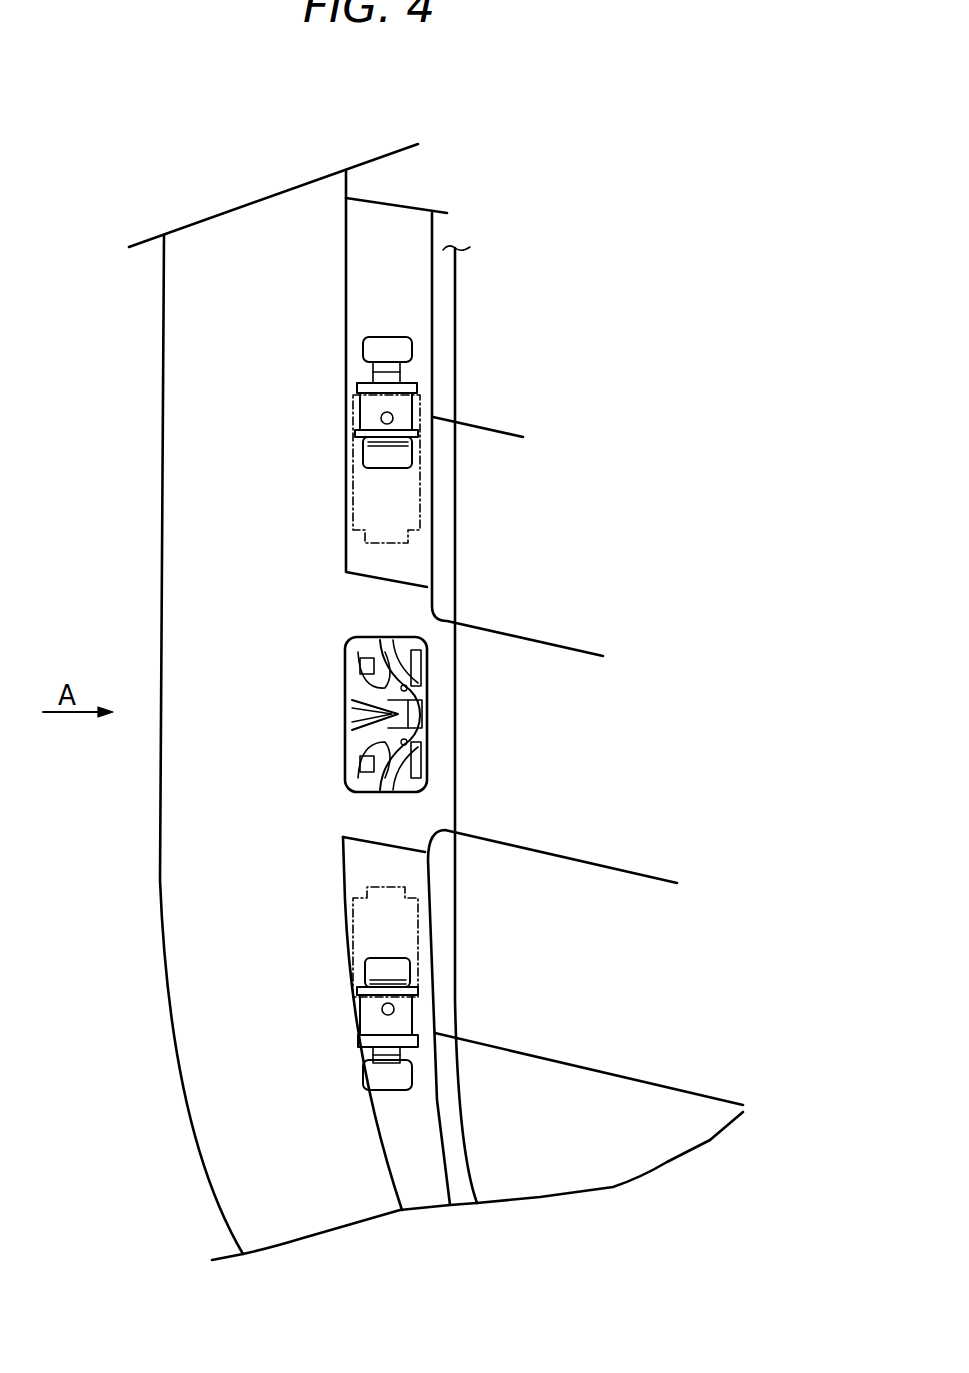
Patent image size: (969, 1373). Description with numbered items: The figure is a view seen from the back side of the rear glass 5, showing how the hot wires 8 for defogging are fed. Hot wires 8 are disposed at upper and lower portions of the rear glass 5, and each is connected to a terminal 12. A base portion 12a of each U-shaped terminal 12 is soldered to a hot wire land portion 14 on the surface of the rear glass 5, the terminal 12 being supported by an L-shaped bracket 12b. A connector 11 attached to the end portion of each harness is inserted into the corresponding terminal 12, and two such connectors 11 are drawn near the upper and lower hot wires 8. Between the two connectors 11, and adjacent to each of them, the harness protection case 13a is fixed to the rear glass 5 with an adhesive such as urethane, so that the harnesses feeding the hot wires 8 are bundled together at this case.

The rear glass 5 is at (193, 378).
The hot wire 8 is at (507, 436).
The connector 11 is at (423, 490).
The terminal 12 is at (395, 402).
The base portion 12a is at (380, 455).
The L-shaped bracket 12b is at (397, 343).
The fastener 13a is at (422, 702).
The hot wire land portion 14 is at (393, 229).